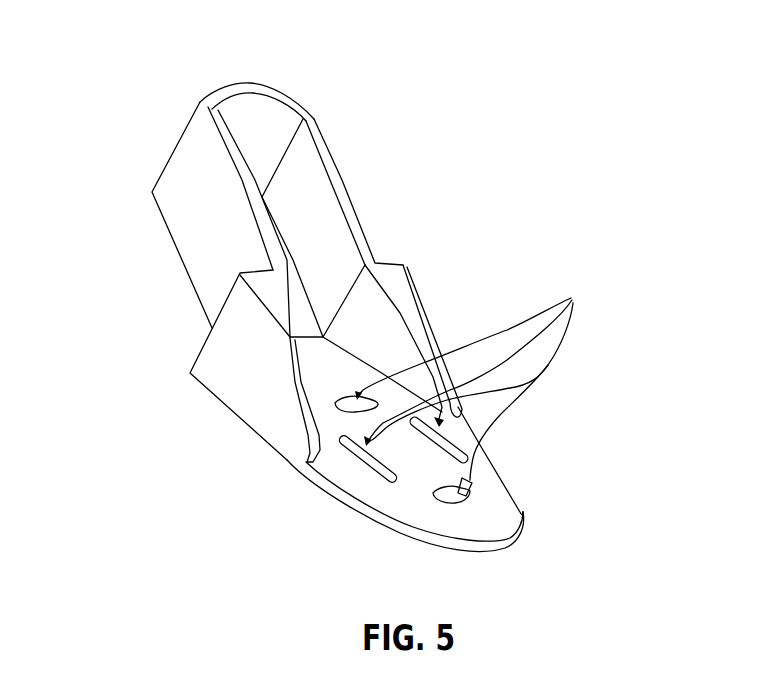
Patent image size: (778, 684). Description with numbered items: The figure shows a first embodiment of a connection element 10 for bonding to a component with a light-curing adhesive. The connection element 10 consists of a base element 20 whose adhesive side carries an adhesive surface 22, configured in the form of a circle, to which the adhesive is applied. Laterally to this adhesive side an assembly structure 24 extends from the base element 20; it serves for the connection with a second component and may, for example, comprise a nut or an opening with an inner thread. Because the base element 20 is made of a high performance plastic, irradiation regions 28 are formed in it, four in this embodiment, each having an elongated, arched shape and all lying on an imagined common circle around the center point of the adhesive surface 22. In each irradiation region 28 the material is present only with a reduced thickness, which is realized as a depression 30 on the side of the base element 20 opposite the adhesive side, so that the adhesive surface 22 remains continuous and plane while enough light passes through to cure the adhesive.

The connection element 10 is at (341, 285).
The base element 20 is at (418, 475).
The adhesive surface 22 is at (350, 517).
The assembly structure 24 is at (168, 140).
The irradiation region 28 is at (572, 298).
The depression 30 is at (457, 497).